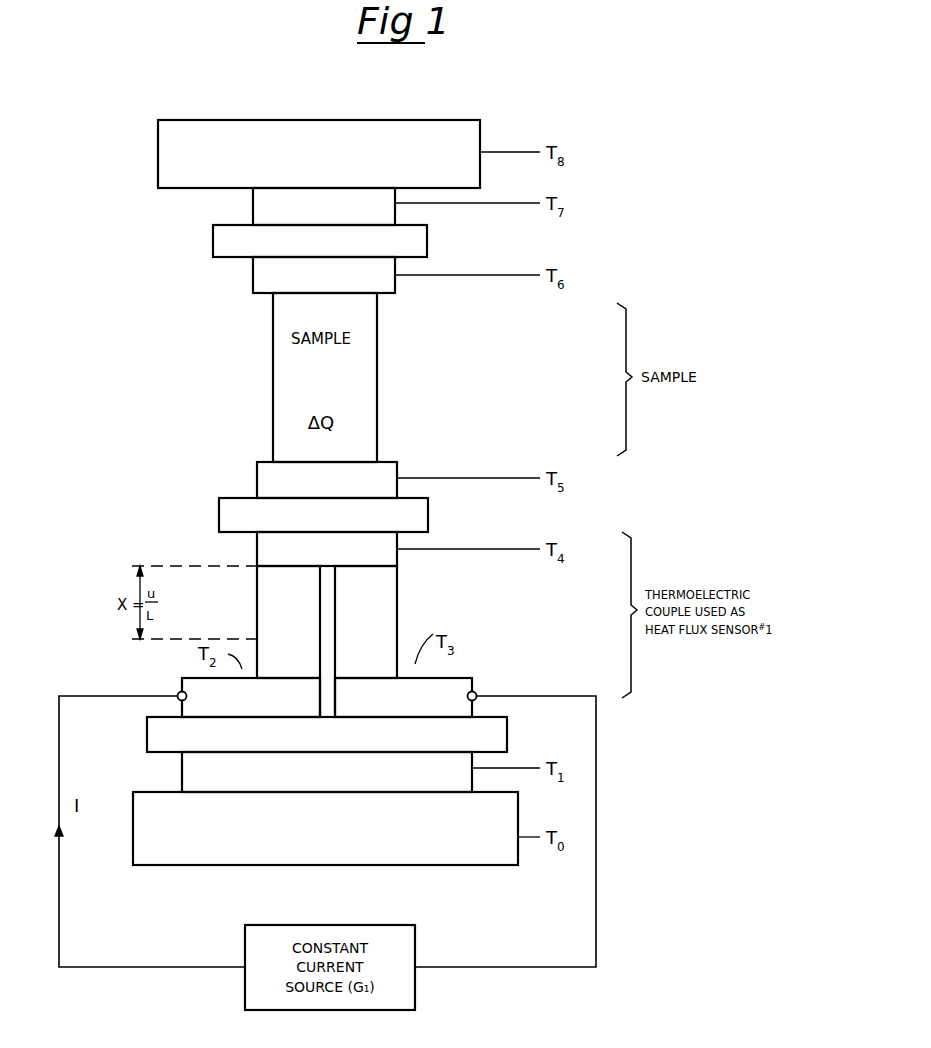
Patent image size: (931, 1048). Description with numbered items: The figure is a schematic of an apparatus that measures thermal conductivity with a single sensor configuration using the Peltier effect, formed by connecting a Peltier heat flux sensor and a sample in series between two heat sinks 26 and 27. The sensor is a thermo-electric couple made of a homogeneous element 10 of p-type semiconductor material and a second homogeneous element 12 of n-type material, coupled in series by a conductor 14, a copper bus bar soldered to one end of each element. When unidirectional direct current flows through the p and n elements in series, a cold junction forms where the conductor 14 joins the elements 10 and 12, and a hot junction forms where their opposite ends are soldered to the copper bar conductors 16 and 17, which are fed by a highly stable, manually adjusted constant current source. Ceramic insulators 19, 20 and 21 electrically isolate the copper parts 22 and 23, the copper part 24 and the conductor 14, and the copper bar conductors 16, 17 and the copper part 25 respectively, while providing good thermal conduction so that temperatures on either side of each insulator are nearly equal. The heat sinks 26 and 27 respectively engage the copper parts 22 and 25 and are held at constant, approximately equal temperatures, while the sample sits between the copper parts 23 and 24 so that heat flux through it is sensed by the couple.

The homogeneous element of p-type semiconductor material 10 is at (397, 582).
The homogeneous element of n-type semiconductor material 12 is at (257, 588).
The conductor 14 is at (257, 546).
The copper bar conductor 16 is at (182, 692).
The copper bar conductor 17 is at (475, 692).
The ceramic insulator 19 is at (213, 243).
The ceramic insulator 20 is at (219, 510).
The ceramic insulator 21 is at (147, 733).
The copper part 22 is at (253, 205).
The copper part 23 is at (253, 280).
The copper part 24 is at (257, 475).
The copper part 25 is at (182, 771).
The heat sink 26 is at (158, 161).
The heat sink 27 is at (133, 855).